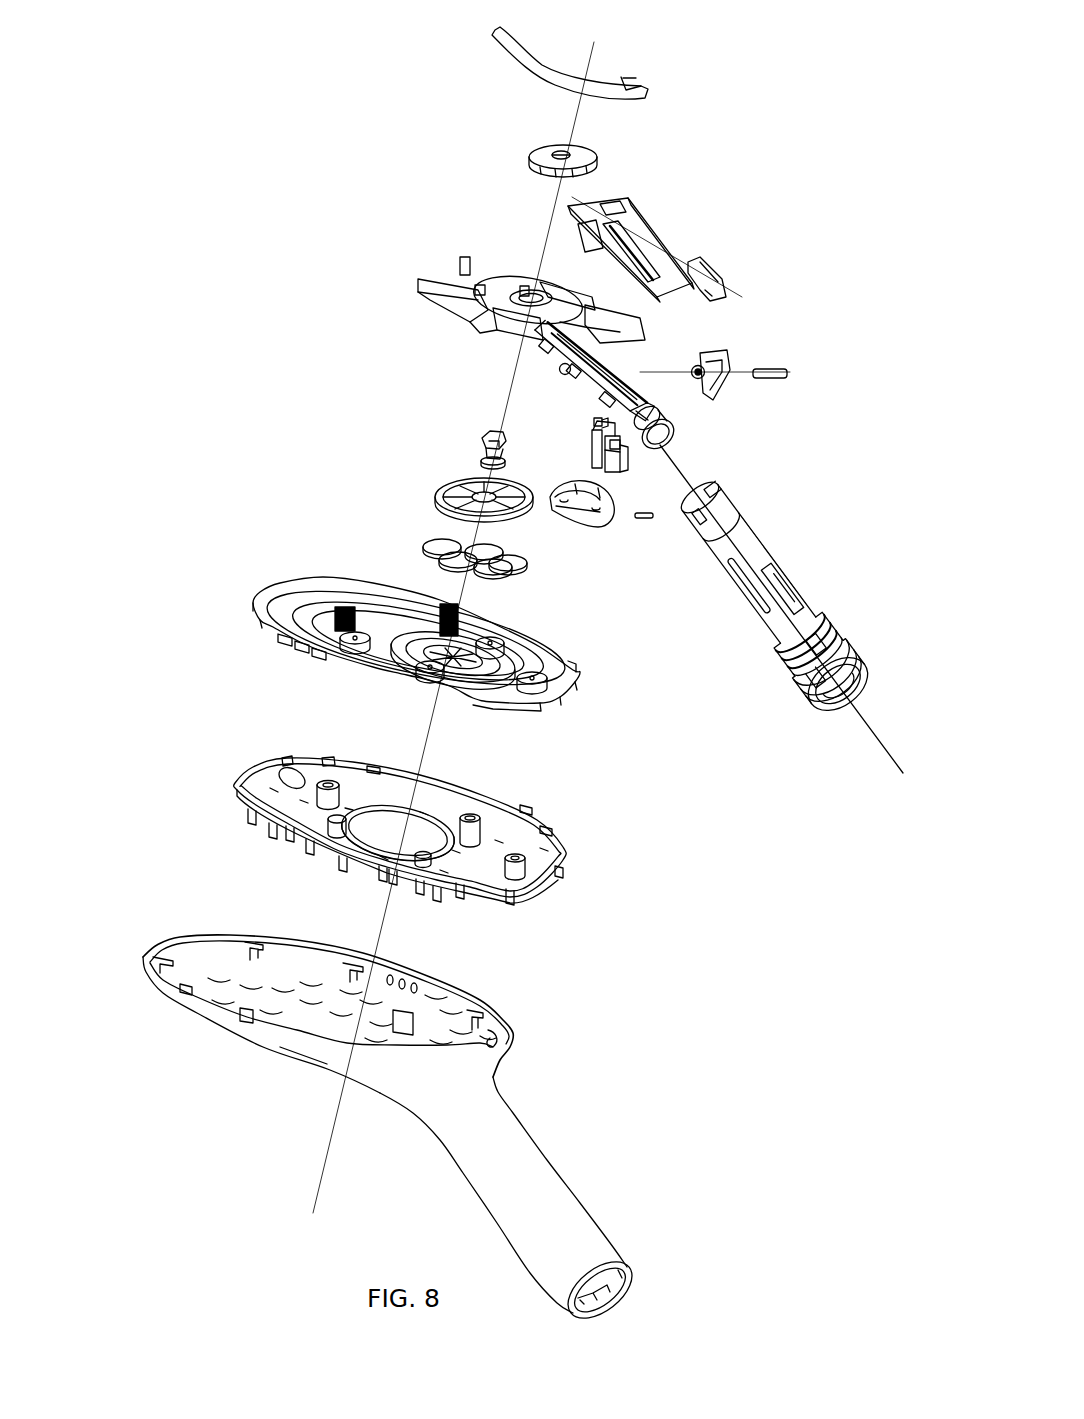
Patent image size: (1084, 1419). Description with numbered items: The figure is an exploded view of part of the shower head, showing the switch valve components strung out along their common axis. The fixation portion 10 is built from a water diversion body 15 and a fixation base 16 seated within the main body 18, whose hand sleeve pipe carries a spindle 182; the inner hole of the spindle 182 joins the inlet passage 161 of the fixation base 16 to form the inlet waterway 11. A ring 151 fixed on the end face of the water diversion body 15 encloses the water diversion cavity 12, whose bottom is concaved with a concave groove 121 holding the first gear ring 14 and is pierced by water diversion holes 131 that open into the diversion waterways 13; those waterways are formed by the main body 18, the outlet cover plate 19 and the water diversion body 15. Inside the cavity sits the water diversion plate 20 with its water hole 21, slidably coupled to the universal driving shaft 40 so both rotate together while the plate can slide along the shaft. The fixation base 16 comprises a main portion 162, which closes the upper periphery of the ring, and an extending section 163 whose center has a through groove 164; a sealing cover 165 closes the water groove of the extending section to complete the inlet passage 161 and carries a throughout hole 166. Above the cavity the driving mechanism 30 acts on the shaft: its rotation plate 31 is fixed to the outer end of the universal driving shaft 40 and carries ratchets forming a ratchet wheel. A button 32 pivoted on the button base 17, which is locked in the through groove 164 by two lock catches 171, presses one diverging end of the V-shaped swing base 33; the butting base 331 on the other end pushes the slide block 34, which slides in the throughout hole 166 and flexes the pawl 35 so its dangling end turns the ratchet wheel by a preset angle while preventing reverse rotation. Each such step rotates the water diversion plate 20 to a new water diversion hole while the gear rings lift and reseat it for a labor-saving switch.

The fixation portion 10 is at (172, 935).
The inlet waterway 11 is at (662, 386).
The water diversion cavity 12 is at (400, 617).
The diversion waterways 13 is at (520, 639).
The water diversion holes 131 is at (470, 650).
The first gear ring 14 is at (427, 662).
The water diversion body 15 is at (417, 641).
The ring 151 is at (507, 657).
The fixation base 16 is at (586, 319).
The inlet passage 161 is at (603, 386).
The main portion 162 is at (487, 312).
The extending section 163 is at (543, 372).
The through groove 164 is at (595, 365).
The sealing cover 165 is at (646, 235).
The throughout hole 166 is at (643, 251).
The button base 17 is at (593, 455).
The lock catches 171 is at (593, 418).
The main body 18 is at (500, 1147).
The spindle 182 is at (747, 543).
The outlet cover plate 19 is at (257, 767).
The water diversion plate 20 is at (452, 480).
The water hole 21 is at (447, 488).
The driving mechanism 30 is at (520, 148).
The rotation plate 31 is at (594, 156).
The button 32 is at (577, 507).
The swing base 33 is at (733, 362).
The butting base 331 is at (716, 352).
The slide block 34 is at (720, 278).
The pawl 35 is at (543, 67).
The universal driving shaft 40 is at (483, 443).
The concave groove 121 is at (482, 693).